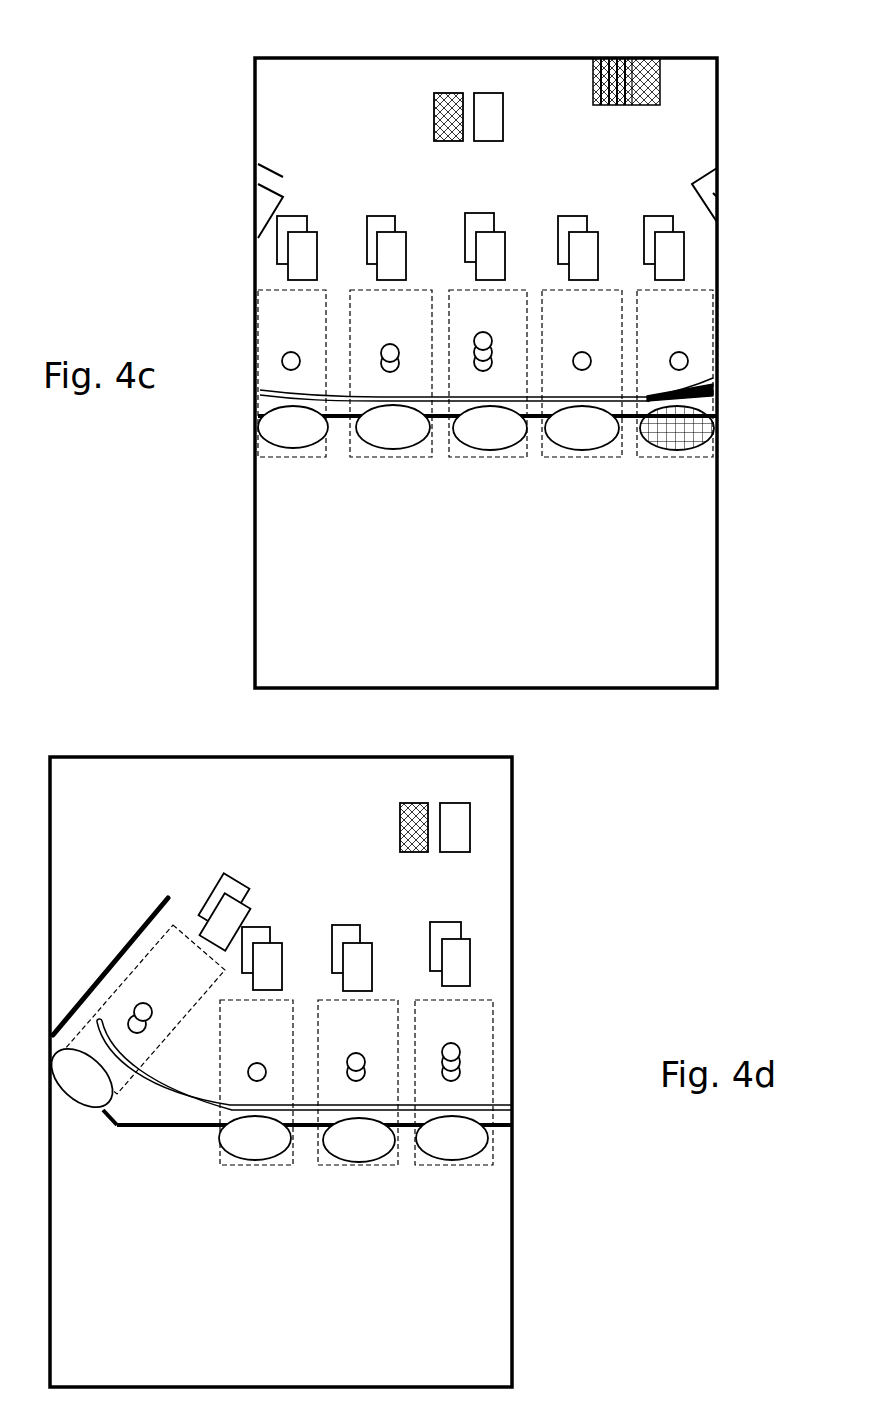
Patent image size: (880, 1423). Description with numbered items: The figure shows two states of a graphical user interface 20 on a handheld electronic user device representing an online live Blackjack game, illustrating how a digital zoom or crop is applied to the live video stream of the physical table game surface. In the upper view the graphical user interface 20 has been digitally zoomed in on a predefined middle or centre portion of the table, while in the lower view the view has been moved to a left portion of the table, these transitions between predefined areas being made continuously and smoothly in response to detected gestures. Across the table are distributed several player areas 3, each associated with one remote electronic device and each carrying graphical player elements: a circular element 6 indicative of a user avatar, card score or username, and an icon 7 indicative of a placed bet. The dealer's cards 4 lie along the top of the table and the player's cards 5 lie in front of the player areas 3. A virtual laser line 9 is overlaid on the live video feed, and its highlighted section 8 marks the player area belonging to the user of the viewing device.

In FIG. 4C, the player area 3 is at (260, 394).
In FIG. 4D, the player area 3 is at (219, 1076).
In FIG. 4C, the dealer's cards 4 is at (484, 76).
In FIG. 4D, the dealer's cards 4 is at (497, 811).
In FIG. 4C, the player's cards 5 is at (297, 216).
In FIG. 4D, the player's cards 5 is at (458, 964).
In FIG. 4C, the graphical player element 6 is at (490, 455).
In FIG. 4D, the graphical player element 6 is at (442, 1147).
In FIG. 4C, the graphical player element 7 is at (384, 368).
In FIG. 4D, the graphical player element 7 is at (455, 1052).
In FIG. 4C, the highlighted section 8 is at (713, 378).
In FIG. 4D, the virtual laser line 9 is at (120, 1128).
In FIG. 4C, the graphical user interface 20 is at (680, 92).
In FIG. 4D, the graphical user interface 20 is at (165, 785).